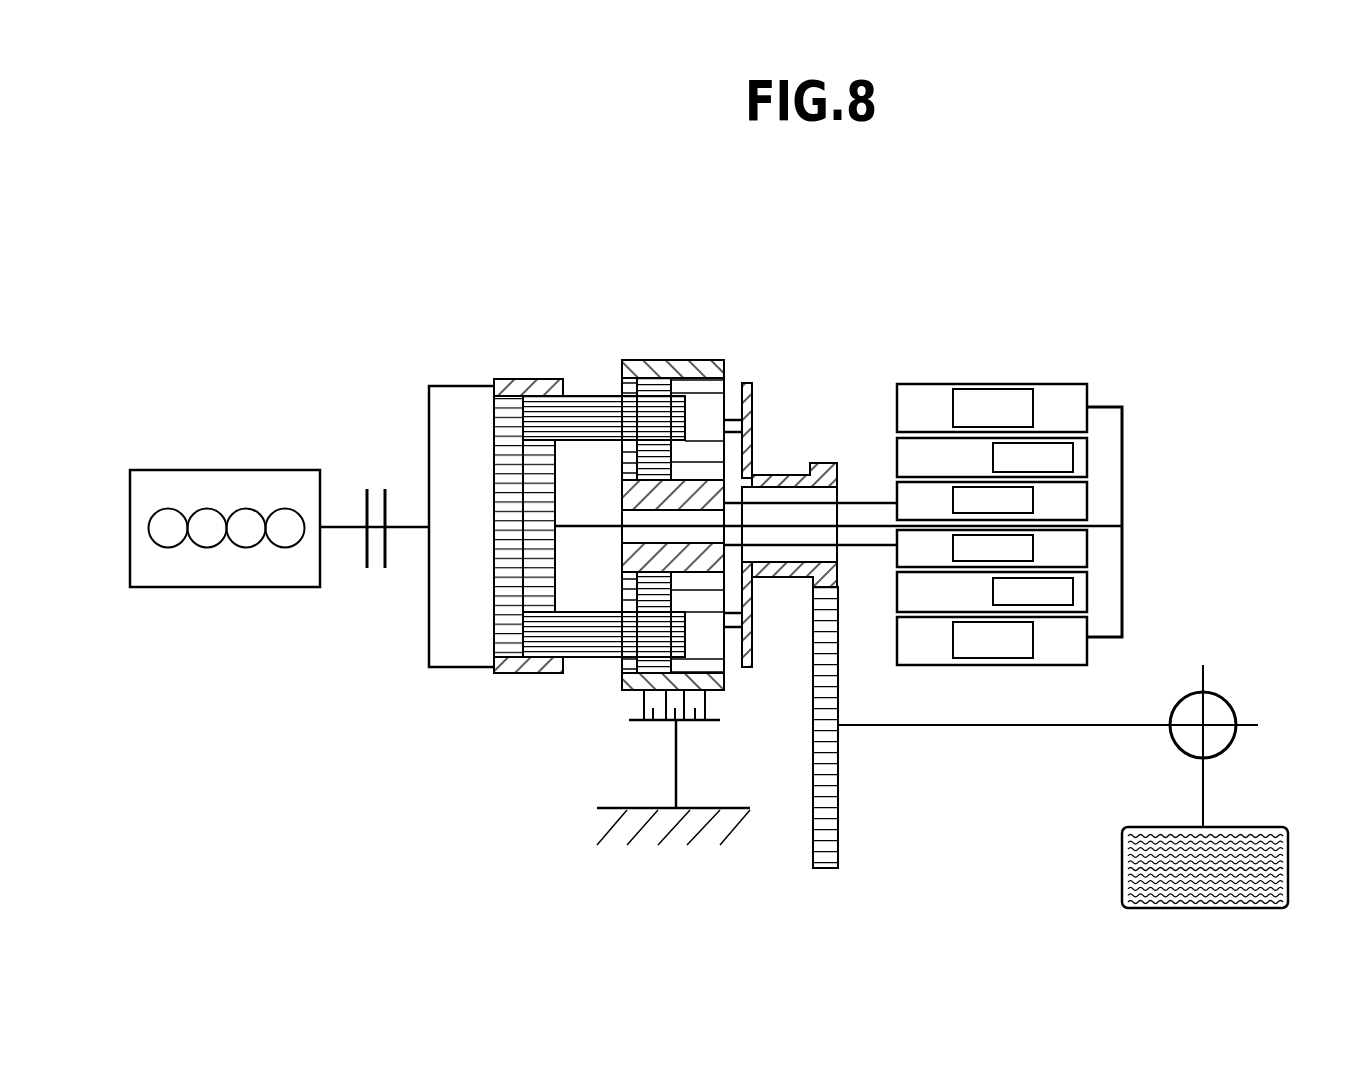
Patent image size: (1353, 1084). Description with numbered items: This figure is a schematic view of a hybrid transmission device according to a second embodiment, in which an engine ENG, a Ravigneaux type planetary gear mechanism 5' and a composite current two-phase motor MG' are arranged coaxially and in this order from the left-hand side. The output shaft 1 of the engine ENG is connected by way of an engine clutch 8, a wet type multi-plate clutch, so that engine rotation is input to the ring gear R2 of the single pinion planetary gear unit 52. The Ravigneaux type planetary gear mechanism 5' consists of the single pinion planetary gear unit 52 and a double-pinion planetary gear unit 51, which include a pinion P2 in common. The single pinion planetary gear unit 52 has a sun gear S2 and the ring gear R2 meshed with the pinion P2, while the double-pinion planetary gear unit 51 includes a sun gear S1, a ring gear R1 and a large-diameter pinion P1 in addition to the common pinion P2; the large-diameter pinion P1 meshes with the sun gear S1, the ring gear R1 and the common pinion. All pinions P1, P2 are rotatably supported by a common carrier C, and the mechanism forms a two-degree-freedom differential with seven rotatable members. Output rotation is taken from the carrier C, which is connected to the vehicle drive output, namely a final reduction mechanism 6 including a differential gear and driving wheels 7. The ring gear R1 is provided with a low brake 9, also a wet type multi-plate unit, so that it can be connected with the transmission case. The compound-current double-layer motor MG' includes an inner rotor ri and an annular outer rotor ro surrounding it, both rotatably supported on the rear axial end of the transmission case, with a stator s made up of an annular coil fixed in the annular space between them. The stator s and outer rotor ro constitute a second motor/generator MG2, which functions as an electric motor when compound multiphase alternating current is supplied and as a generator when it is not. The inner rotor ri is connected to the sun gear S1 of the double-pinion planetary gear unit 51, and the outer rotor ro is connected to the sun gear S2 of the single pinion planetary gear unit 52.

The engine ENG is at (205, 590).
The output shaft 1 is at (345, 523).
The engine clutch 8 is at (377, 567).
The Ravigneaux type planetary gear mechanism 5' is at (625, 473).
The single pinion planetary gear unit 52 is at (576, 296).
The double-pinion planetary gear unit 51 is at (727, 296).
The ring gear R2 is at (530, 673).
The sun gear S2 is at (540, 532).
The pinion P2 is at (603, 652).
The ring gear R1 is at (698, 370).
The large-diameter pinion P1 is at (632, 382).
The sun gear S1 is at (680, 492).
The common carrier C is at (825, 463).
The low brake 9 is at (643, 720).
The composite current two-phase motor MG' is at (1052, 455).
The second motor/generator MG2 is at (1057, 521).
The outer rotor ro is at (992, 524).
The stator s is at (992, 525).
The inner rotor ri is at (992, 524).
The final reduction mechanism 6 is at (1178, 745).
The driving wheels 7 is at (1122, 870).